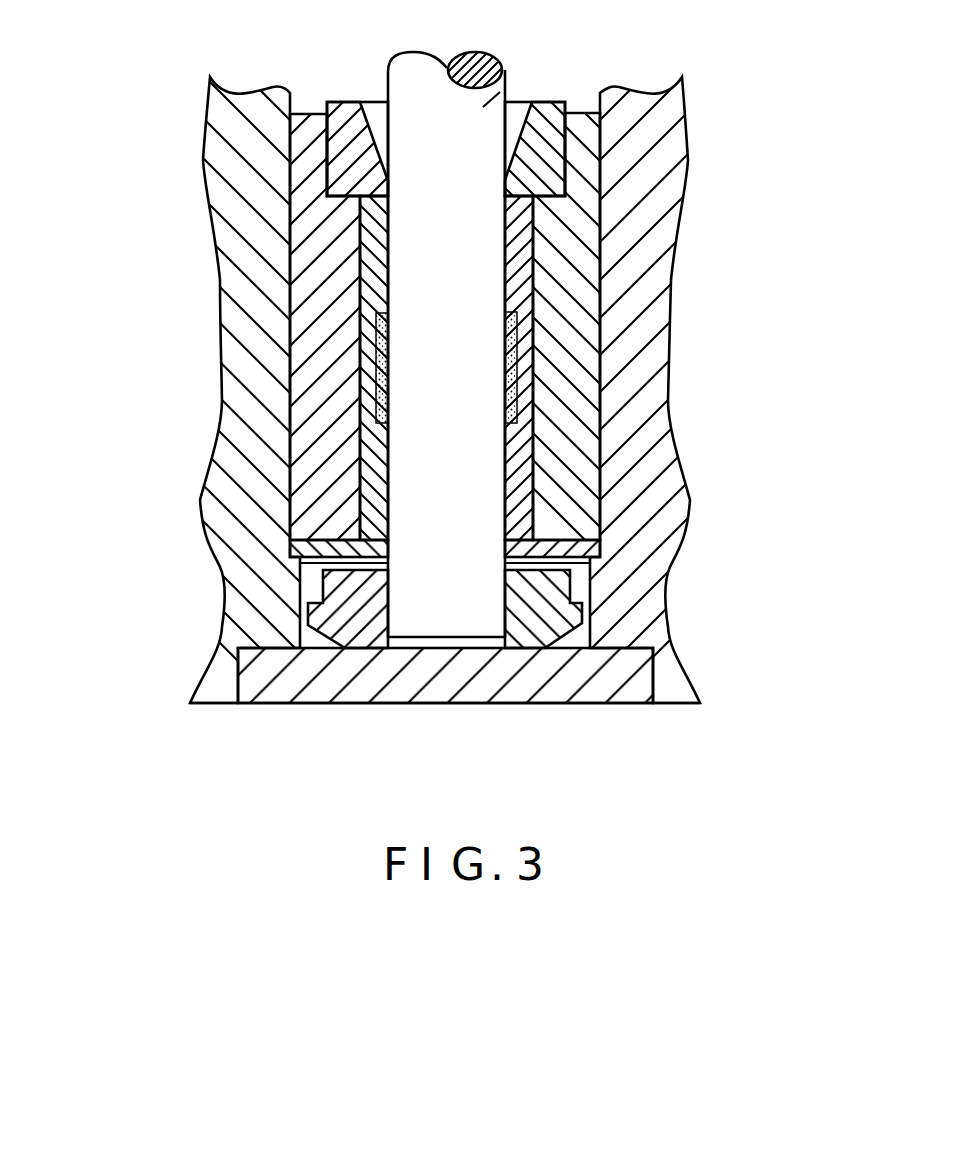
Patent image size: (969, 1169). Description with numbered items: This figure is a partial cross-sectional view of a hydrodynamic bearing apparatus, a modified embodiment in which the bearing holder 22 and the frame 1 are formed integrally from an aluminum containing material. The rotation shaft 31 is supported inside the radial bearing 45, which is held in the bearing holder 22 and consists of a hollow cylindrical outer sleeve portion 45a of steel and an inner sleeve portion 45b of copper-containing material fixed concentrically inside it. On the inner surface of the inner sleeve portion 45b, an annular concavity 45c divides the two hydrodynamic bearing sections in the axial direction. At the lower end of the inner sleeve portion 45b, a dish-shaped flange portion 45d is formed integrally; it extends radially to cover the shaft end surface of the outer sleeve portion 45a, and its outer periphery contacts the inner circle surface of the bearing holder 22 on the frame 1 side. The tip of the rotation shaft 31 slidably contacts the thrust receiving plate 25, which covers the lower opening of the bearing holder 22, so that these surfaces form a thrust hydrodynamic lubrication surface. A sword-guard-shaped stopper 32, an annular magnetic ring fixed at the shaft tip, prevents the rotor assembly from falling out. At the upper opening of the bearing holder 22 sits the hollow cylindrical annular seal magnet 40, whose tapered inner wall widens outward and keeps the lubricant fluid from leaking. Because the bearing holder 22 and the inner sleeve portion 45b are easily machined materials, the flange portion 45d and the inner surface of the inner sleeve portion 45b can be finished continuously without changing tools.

The frame 1 is at (213, 682).
The bearing holder 22 is at (245, 401).
The thrust receiving plate 25 is at (640, 678).
The rotation shaft 31 is at (508, 90).
The stopper 32 is at (357, 620).
The annular seal magnet 40 is at (345, 158).
The radial bearing 45 is at (474, 324).
The outer sleeve portion 45a is at (567, 256).
The inner sleeve portion 45b is at (520, 290).
The annular concavity 45c is at (517, 354).
The flange portion 45d is at (295, 578).